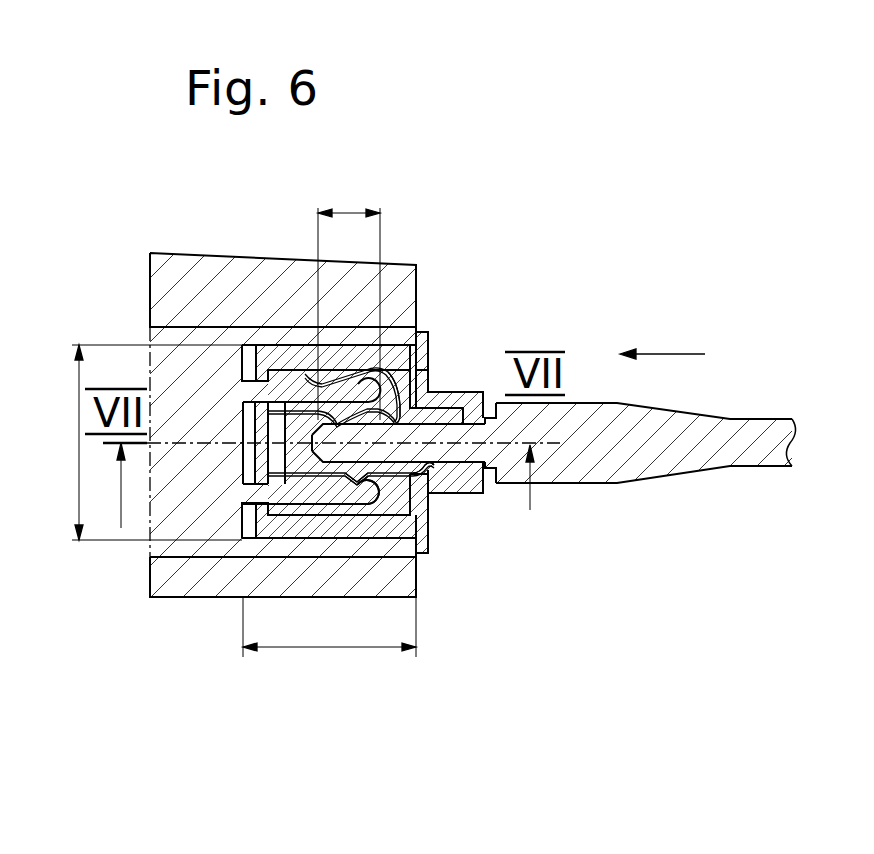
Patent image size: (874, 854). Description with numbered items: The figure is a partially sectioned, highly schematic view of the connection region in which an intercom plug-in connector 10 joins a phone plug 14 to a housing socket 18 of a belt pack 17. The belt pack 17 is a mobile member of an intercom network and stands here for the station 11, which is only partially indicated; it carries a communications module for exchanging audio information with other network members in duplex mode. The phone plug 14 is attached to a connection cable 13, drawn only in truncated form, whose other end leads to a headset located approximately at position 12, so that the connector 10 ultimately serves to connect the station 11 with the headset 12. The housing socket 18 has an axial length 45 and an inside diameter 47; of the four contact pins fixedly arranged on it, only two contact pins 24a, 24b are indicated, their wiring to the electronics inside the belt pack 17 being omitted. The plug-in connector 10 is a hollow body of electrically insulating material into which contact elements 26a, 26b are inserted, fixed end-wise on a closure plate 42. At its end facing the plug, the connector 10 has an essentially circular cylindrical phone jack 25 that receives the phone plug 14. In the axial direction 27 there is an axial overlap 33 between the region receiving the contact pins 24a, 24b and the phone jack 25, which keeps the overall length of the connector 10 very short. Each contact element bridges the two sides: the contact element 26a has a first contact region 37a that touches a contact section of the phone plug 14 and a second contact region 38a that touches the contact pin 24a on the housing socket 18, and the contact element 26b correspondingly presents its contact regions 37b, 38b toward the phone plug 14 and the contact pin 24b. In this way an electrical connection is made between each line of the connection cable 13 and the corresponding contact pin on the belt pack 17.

The intercom plug-in connector 10 is at (247, 358).
The station 11 is at (212, 300).
The headset 12 is at (808, 373).
The connection cable 13 is at (760, 445).
The phone plug 14 is at (492, 452).
The belt pack 17 is at (217, 565).
The housing socket 18 is at (292, 349).
The contact pin 24a is at (365, 493).
The contact pin 24b is at (360, 392).
The phone jack 25 is at (442, 400).
The contact element 26a is at (305, 473).
The contact element 26b is at (440, 410).
The axial direction 27 is at (655, 354).
The axial overlap 33 is at (355, 212).
The first contact region 37a is at (397, 473).
The upper contact bow 37b is at (390, 388).
The second contact region 38a is at (358, 482).
The upper spring end 38b is at (315, 378).
The closure plate 42 is at (262, 462).
The axial length 45 is at (349, 648).
The inside diameter 47 is at (79, 470).